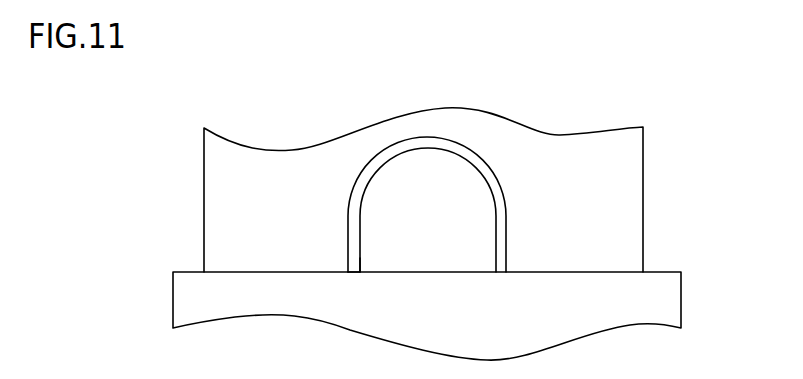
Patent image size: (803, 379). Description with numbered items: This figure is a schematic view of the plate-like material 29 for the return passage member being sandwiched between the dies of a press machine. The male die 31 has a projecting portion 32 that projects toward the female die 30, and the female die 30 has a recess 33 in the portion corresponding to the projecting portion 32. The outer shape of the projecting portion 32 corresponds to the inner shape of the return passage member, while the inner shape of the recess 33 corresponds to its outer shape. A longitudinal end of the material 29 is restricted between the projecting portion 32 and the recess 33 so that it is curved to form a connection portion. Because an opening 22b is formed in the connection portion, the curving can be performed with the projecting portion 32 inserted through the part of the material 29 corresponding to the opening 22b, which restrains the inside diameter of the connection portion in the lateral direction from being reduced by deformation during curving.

The female die 30 is at (643, 197).
The male die 31 is at (681, 300).
The plate-like material 29 is at (491, 222).
The projecting portion 32 is at (500, 203).
The recess 33 is at (472, 157).
The opening 22b is at (361, 268).